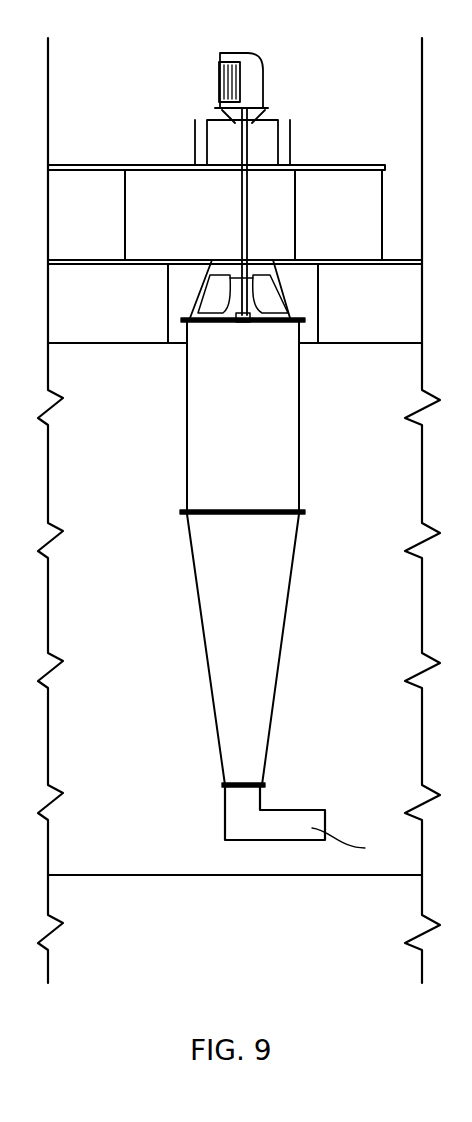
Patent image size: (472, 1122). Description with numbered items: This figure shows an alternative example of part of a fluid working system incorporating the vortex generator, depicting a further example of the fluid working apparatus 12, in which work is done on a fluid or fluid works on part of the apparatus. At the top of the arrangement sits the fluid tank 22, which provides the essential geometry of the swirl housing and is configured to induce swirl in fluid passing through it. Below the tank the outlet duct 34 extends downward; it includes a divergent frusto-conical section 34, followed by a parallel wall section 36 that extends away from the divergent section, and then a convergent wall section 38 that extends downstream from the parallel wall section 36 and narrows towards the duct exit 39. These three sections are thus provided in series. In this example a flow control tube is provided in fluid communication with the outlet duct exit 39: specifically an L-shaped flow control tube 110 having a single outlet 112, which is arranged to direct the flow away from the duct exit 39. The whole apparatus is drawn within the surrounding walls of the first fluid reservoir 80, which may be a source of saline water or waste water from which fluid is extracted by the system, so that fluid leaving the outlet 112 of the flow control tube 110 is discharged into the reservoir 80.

The fluid working apparatus 12 is at (137, 91).
The fluid tank 22 is at (383, 188).
The outlet duct 34 is at (266, 561).
The parallel wall section 36 is at (205, 433).
The convergent wall section 38 is at (213, 585).
The duct exit 39 is at (222, 787).
The first fluid reservoir 80 is at (70, 728).
The flow control tube 110 is at (310, 808).
The outlet 112 is at (363, 845).